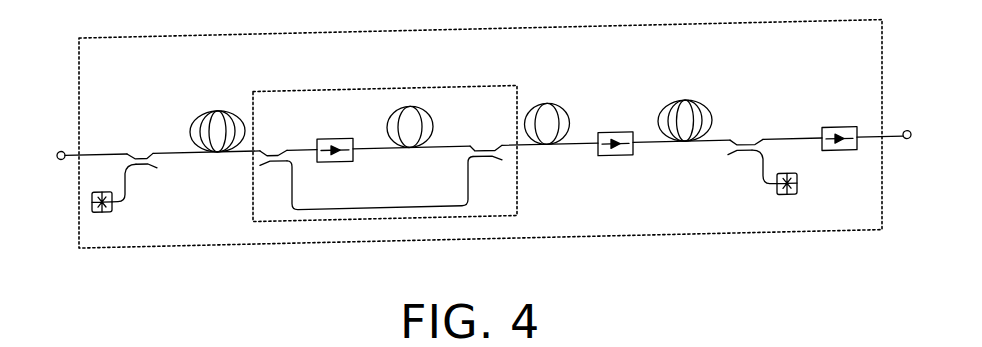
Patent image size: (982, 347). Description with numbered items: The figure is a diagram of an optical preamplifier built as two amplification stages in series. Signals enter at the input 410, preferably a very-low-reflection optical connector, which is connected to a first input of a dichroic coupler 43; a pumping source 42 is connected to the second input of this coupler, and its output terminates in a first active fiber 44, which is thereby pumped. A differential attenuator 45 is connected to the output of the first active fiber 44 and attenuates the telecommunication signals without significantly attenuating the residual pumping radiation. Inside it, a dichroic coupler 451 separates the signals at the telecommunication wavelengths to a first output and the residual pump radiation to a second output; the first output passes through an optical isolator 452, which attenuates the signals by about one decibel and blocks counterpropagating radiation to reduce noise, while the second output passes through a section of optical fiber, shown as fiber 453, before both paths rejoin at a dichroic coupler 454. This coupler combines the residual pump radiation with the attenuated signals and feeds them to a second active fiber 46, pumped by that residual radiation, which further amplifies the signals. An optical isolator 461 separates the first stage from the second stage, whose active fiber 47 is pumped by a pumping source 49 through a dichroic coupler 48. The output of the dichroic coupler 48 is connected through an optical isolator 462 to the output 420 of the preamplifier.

The input 410 is at (59, 142).
The pumping source 42 is at (102, 224).
The dichroic coupler 43 is at (139, 150).
The first active fiber 44 is at (219, 112).
The differential attenuator 45 is at (452, 89).
The dichroic coupler 451 is at (274, 148).
The optical isolator 452 is at (338, 142).
The optical fiber coil 453 is at (410, 163).
The dichroic coupler 454 is at (487, 172).
The second active fiber 46 is at (546, 106).
The optical isolator 461 is at (617, 141).
The active fiber 47 is at (684, 106).
The dichroic coupler 48 is at (750, 146).
The pumping source 49 is at (788, 219).
The optical isolator 462 is at (840, 138).
The output 420 is at (909, 140).